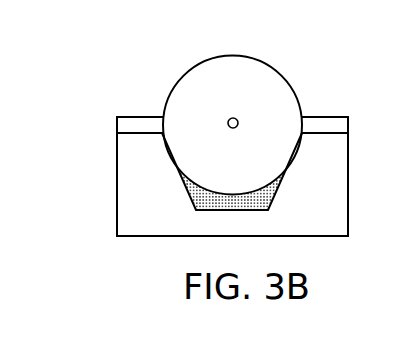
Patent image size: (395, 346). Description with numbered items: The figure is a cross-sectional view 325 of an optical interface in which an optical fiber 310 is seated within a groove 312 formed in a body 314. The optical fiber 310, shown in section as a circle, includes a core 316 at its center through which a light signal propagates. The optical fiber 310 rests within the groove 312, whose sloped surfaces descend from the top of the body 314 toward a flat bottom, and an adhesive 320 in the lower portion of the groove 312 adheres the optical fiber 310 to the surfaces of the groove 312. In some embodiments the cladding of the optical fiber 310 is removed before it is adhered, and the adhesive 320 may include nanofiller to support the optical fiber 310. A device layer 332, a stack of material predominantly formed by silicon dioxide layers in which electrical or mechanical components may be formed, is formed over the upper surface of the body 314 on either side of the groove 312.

The cross-sectional view 325 is at (92, 72).
The optical fiber 310 is at (186, 71).
The groove 312 is at (288, 174).
The body 314 is at (117, 221).
The core 316 is at (255, 104).
The adhesive 320 is at (196, 209).
The device layer 332 is at (117, 118).